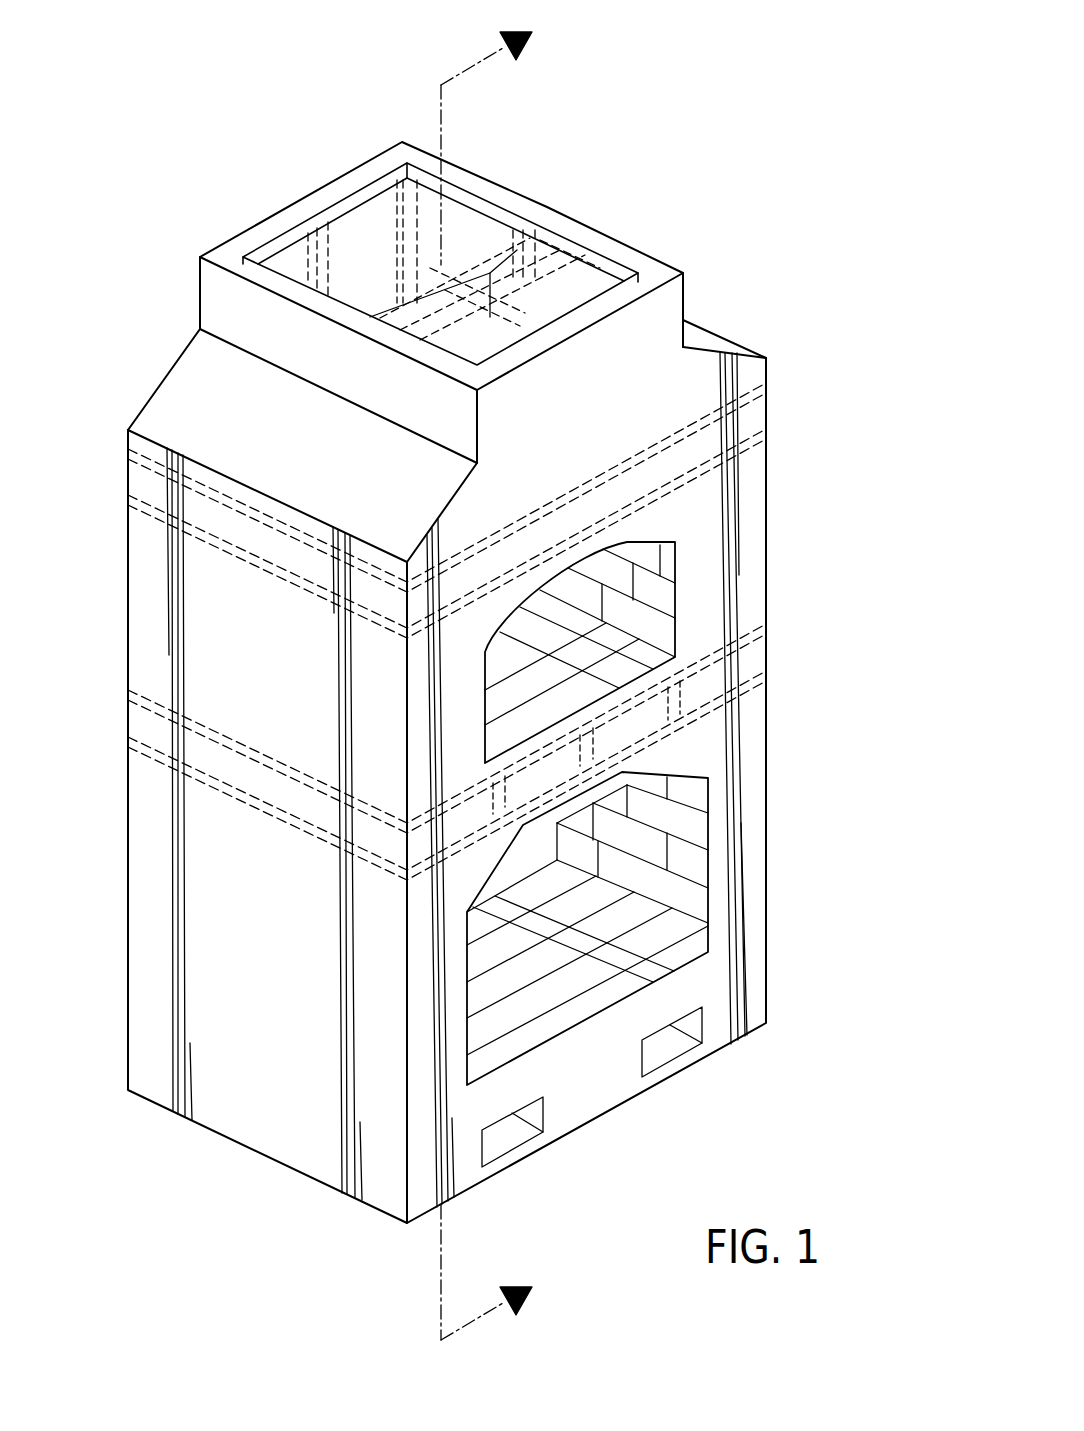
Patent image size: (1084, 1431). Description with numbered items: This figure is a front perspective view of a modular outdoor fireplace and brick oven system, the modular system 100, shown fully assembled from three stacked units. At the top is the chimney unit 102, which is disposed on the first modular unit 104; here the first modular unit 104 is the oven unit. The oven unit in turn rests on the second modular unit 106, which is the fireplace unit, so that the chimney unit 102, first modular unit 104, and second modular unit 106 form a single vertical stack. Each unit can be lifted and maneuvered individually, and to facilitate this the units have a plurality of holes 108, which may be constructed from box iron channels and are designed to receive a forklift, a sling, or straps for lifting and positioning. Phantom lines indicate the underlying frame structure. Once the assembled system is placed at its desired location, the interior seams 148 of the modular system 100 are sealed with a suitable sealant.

The modular system 100 is at (733, 159).
The chimney unit 102 is at (767, 373).
The first modular unit 104 is at (767, 555).
The second modular unit 106 is at (768, 795).
The holes 108 is at (506, 1131).
The interior seams 148 is at (407, 220).